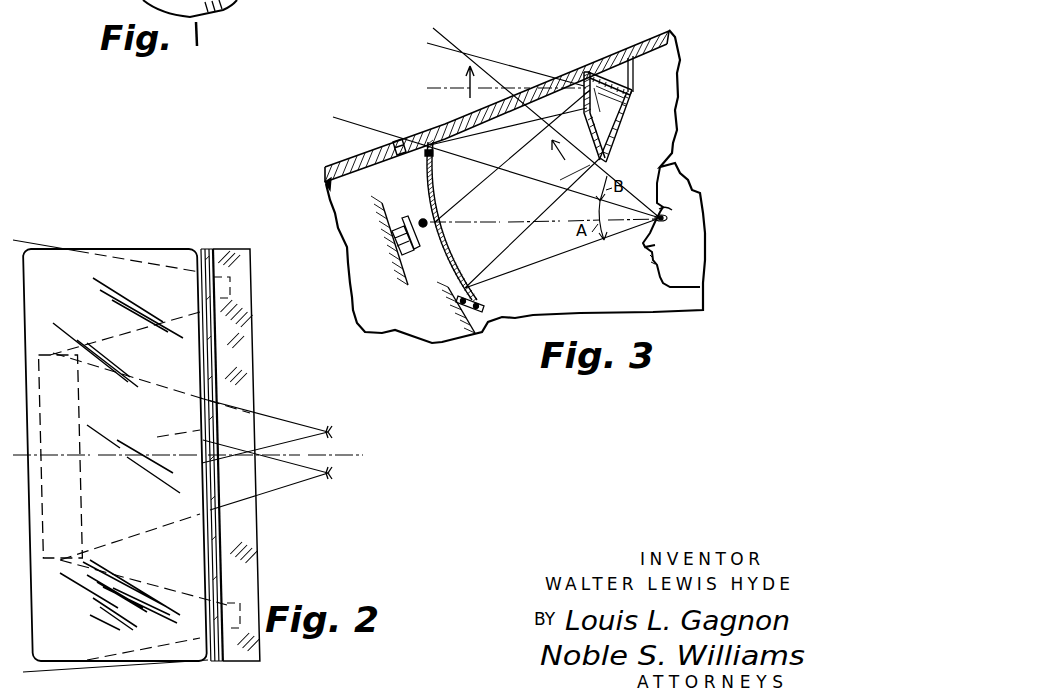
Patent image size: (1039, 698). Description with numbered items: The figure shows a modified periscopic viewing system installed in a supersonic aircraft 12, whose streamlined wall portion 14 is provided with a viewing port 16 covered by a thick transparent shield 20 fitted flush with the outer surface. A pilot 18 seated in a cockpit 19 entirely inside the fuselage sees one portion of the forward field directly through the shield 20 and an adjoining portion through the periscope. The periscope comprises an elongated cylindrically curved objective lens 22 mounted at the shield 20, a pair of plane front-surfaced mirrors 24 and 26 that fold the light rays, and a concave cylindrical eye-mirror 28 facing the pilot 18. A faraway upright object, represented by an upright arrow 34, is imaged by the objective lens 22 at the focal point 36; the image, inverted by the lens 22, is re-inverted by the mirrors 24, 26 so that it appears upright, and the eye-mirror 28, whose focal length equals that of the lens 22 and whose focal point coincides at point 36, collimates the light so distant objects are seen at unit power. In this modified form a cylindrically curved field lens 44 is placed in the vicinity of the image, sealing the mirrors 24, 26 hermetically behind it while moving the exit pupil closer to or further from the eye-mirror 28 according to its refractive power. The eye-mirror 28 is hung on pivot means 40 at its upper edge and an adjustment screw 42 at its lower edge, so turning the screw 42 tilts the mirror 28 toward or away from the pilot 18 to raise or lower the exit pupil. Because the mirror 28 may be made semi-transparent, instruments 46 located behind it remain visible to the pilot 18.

In FIG. 3, the aircraft 12 is at (603, 43).
In FIG. 3, the wall portion 14 is at (640, 42).
In FIG. 3, the viewing port 16 is at (398, 141).
In FIG. 3, the pilot 18 is at (647, 272).
In FIG. 3, the cockpit 19 is at (675, 58).
In FIG. 3, the transparent shield 20 is at (431, 145).
In FIG. 2, the transparent shield 20 is at (38, 420).
In FIG. 3, the objective lens 22 is at (583, 93).
In FIG. 2, the objective lens 22 is at (208, 248).
In FIG. 3, the plane mirror 24 is at (612, 90).
In FIG. 2, the plane mirror 24 is at (252, 338).
In FIG. 3, the plane mirror 26 is at (624, 127).
In FIG. 3, the concave cylindrical mirror 28 is at (455, 276).
In FIG. 2, the concave cylindrical mirror 28 is at (44, 356).
In FIG. 3, the upright arrow 34 is at (466, 80).
In FIG. 3, the focal point 36 is at (567, 175).
In FIG. 3, the pivot means 40 is at (423, 219).
In FIG. 3, the adjustment screw 42 is at (488, 304).
In FIG. 3, the field lens 44 is at (572, 130).
In FIG. 3, the instruments 46 is at (405, 253).